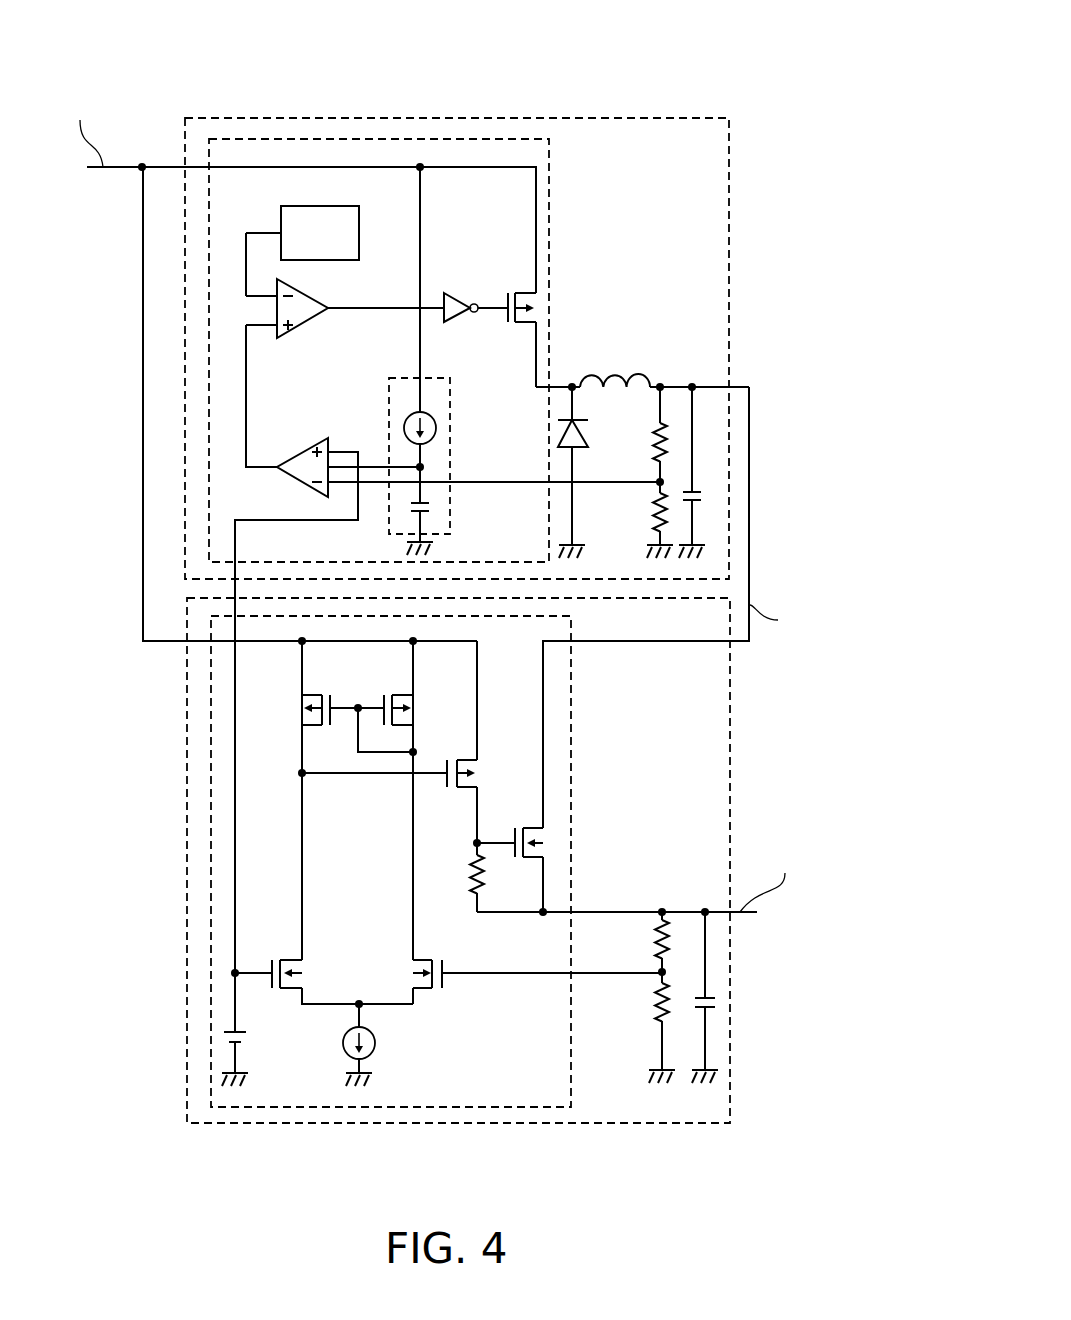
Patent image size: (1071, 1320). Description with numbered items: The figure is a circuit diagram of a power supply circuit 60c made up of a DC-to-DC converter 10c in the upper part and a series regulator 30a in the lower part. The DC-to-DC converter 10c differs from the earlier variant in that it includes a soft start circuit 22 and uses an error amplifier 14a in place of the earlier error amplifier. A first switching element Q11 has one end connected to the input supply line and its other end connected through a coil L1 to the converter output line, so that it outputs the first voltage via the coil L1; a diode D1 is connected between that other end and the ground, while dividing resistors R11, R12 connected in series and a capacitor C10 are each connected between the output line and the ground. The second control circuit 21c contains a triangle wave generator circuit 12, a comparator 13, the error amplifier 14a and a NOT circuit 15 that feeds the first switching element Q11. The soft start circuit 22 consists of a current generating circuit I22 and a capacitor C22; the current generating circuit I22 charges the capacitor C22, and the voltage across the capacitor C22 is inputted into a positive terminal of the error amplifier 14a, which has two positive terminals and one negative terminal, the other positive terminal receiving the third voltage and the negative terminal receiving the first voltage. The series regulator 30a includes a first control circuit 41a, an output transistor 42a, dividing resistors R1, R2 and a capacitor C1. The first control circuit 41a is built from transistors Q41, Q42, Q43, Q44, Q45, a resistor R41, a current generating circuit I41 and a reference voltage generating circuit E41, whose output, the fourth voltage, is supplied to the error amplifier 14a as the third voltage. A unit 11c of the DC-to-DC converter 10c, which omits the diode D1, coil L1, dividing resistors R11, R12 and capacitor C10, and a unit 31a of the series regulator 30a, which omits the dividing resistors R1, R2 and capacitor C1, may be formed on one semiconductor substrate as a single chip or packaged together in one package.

The power supply circuit 60c is at (731, 70).
The DC-to-DC converter 10c is at (579, 118).
The unit 11c is at (486, 139).
The second control circuit 21c is at (419, 99).
The triangle wave generator circuit 12 is at (362, 231).
The comparator 13 is at (313, 297).
The error amplifier 14a is at (300, 447).
The NOT circuit 15 is at (447, 290).
The soft start circuit 22 is at (437, 378).
The current generating circuit I22 is at (436, 420).
The capacitor C22 is at (432, 505).
The first switching element Q11 is at (508, 290).
The coil L1 is at (625, 372).
The diode D1 is at (590, 432).
The dividing resistor R11 is at (668, 432).
The dividing resistor R12 is at (668, 496).
The capacitor C10 is at (703, 496).
The series regulator 30a is at (642, 1123).
The unit 31a is at (517, 1107).
The first control circuit 41a is at (238, 1138).
The output transistor 42a is at (550, 845).
The transistor Q41 is at (305, 973).
The transistor Q42 is at (410, 973).
The transistor Q43 is at (295, 715).
The transistor Q44 is at (415, 715).
The transistor Q45 is at (447, 790).
The resistor R41 is at (472, 870).
The reference voltage generating circuit E41 is at (250, 1035).
The current generating circuit I41 is at (377, 1040).
The dividing resistor R1 is at (668, 935).
The dividing resistor R2 is at (668, 998).
The capacitor C1 is at (718, 1003).